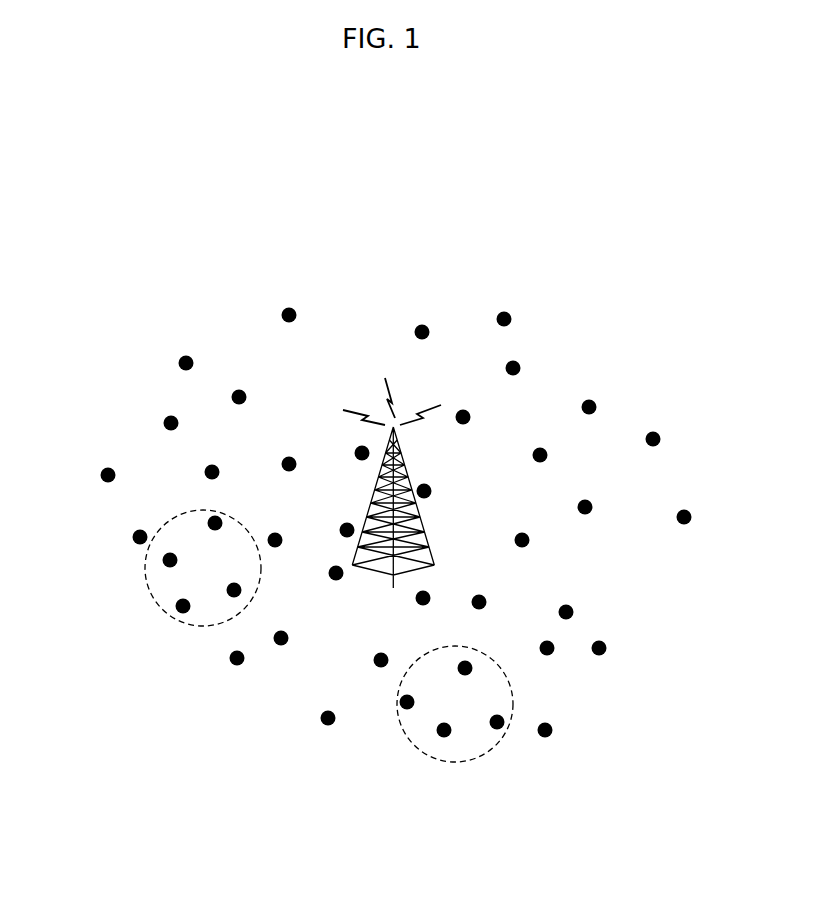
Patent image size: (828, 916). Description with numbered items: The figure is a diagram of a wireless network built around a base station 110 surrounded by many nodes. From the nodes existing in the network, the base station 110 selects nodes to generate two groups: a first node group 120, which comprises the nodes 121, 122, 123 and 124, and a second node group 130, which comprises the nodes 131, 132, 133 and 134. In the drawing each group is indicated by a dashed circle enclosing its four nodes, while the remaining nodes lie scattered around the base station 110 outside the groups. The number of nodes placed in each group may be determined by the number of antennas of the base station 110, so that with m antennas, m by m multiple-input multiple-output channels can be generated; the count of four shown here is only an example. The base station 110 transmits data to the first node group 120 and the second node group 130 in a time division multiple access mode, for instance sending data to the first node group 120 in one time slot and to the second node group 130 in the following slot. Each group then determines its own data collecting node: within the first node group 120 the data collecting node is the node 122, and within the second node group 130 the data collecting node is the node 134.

The base station 110 is at (398, 470).
The node group (1) 120 is at (163, 615).
The node 121 is at (213, 521).
The data collecting node 122 is at (170, 560).
The node 123 is at (183, 606).
The node 124 is at (234, 590).
The node group (2) 130 is at (455, 763).
The node 131 is at (465, 668).
The node 132 is at (407, 703).
The node 133 is at (497, 722).
The data collecting node 134 is at (444, 730).